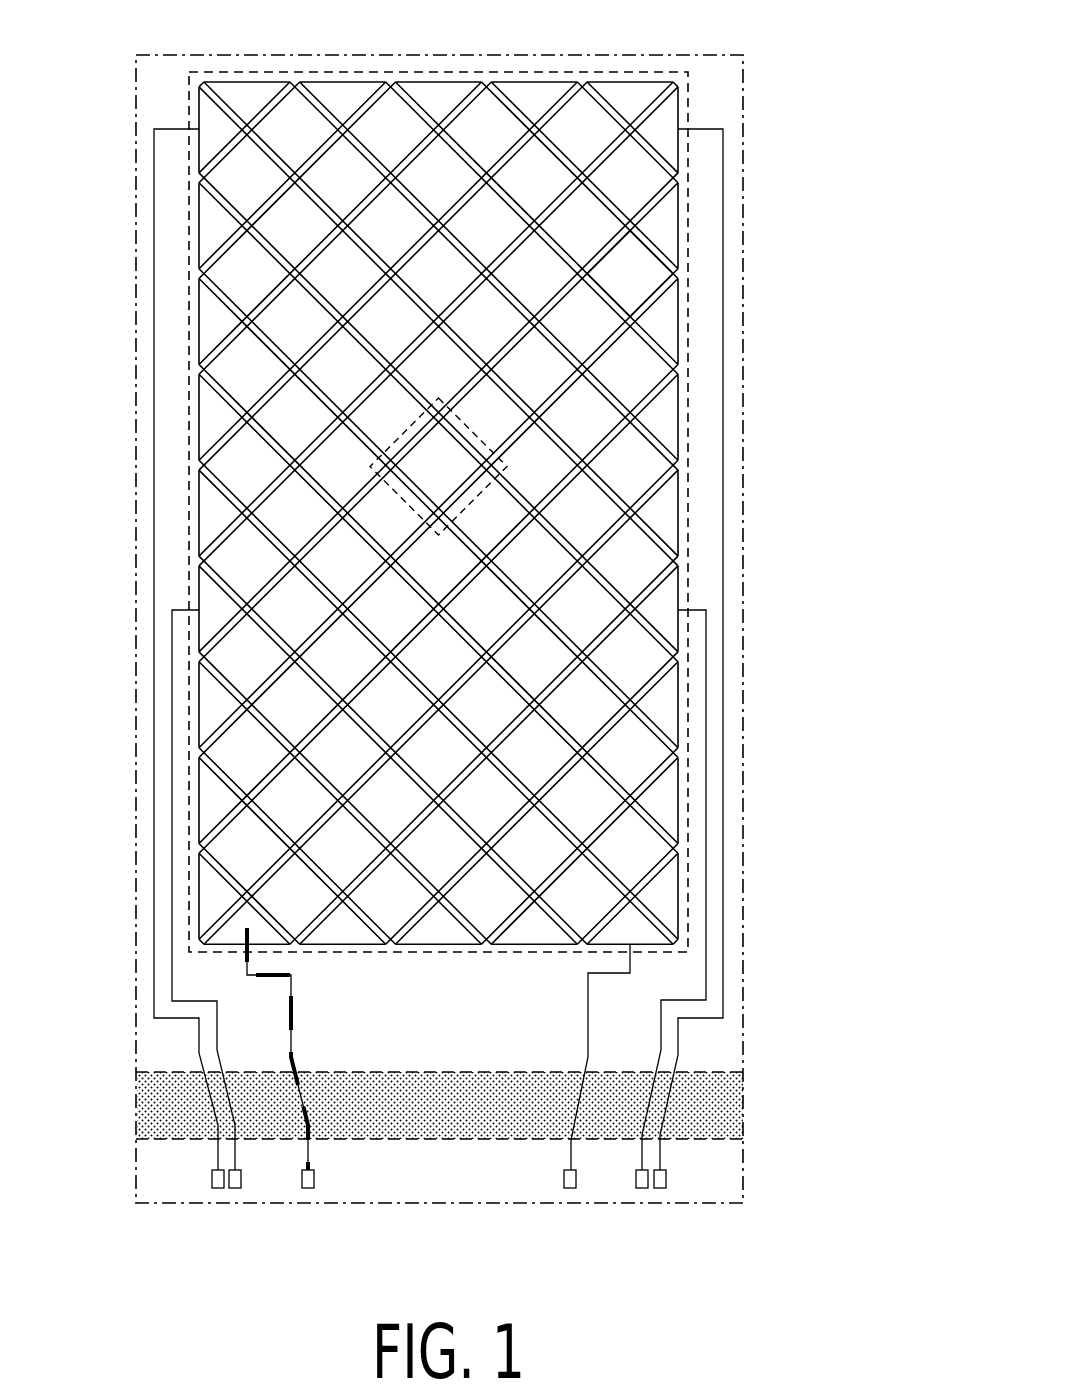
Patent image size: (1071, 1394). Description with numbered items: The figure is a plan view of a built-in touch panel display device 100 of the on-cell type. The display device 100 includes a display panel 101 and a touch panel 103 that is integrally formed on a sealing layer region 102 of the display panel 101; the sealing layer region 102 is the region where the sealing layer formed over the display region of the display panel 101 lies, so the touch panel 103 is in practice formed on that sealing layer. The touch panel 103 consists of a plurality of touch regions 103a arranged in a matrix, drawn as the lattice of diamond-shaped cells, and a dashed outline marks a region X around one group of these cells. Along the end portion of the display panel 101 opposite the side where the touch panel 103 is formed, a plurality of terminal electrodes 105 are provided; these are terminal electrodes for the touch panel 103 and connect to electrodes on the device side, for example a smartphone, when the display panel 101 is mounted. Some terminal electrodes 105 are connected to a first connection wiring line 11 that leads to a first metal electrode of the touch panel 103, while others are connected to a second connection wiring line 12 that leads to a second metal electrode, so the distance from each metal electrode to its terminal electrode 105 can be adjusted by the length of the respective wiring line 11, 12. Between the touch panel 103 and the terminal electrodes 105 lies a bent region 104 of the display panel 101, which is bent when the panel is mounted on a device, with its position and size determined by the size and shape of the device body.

The display device 100 is at (459, 628).
The display panel 101 is at (440, 55).
The sealing layer region 102 is at (688, 104).
The touch panel 103 is at (682, 230).
The touch region 103a is at (645, 275).
The enlarged region X is at (480, 436).
The first connection wiring line 11 is at (154, 753).
The second connection wiring line 12 is at (291, 1003).
The bent region 104 is at (720, 1108).
The terminal electrode 105 is at (212, 1179).